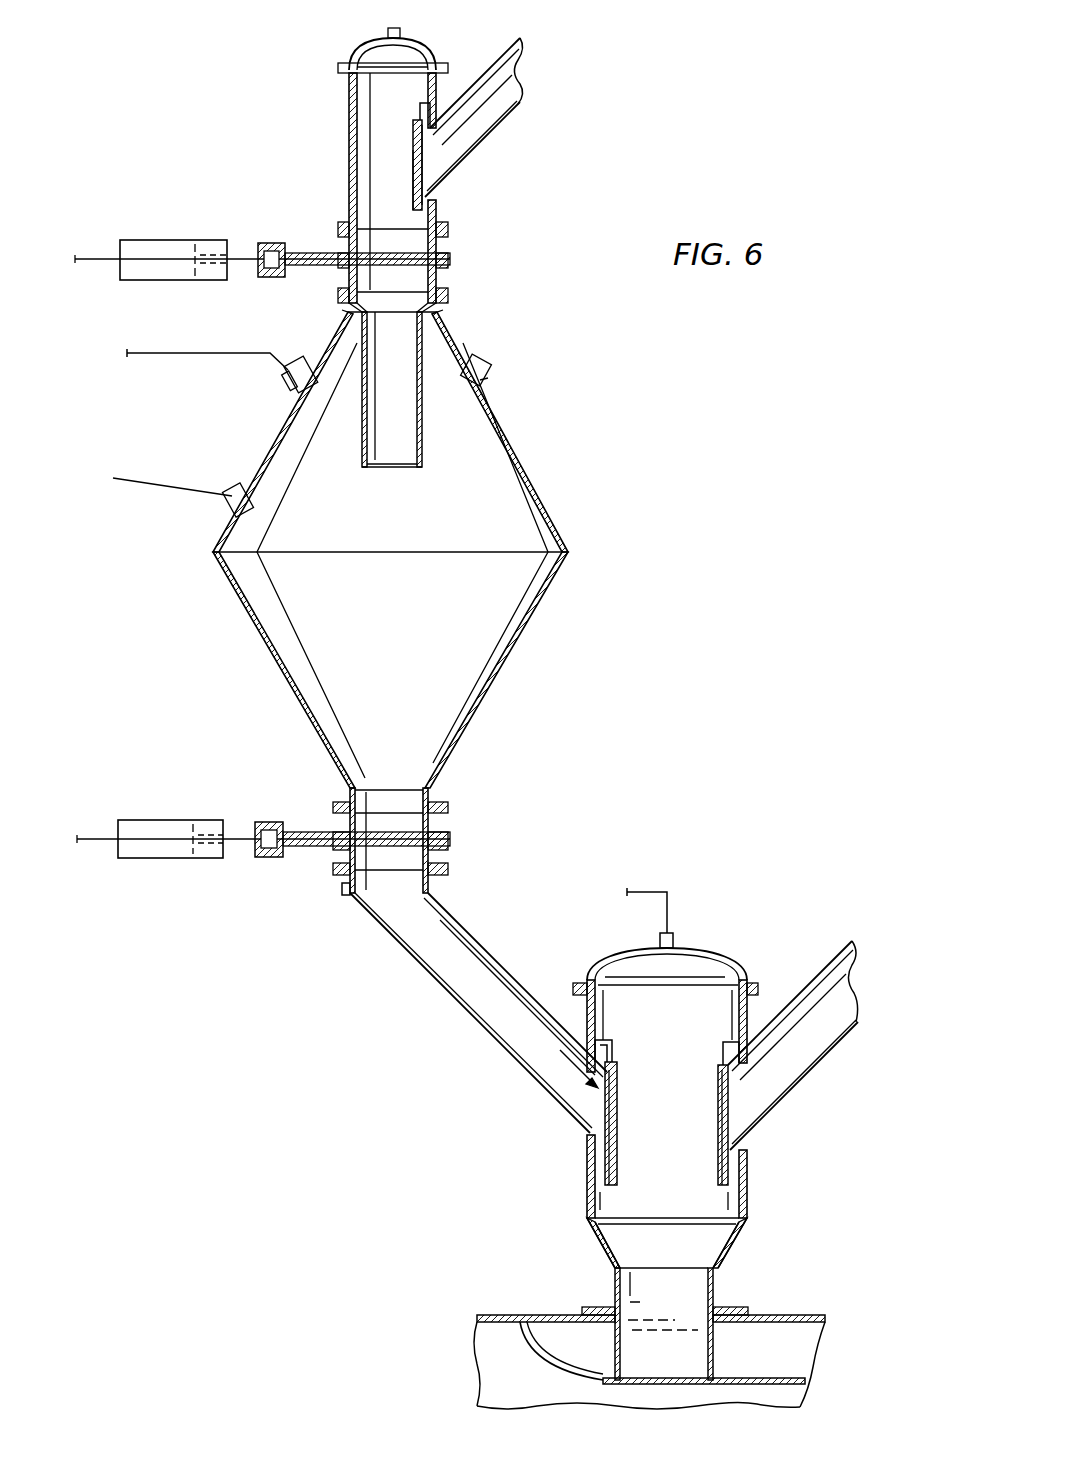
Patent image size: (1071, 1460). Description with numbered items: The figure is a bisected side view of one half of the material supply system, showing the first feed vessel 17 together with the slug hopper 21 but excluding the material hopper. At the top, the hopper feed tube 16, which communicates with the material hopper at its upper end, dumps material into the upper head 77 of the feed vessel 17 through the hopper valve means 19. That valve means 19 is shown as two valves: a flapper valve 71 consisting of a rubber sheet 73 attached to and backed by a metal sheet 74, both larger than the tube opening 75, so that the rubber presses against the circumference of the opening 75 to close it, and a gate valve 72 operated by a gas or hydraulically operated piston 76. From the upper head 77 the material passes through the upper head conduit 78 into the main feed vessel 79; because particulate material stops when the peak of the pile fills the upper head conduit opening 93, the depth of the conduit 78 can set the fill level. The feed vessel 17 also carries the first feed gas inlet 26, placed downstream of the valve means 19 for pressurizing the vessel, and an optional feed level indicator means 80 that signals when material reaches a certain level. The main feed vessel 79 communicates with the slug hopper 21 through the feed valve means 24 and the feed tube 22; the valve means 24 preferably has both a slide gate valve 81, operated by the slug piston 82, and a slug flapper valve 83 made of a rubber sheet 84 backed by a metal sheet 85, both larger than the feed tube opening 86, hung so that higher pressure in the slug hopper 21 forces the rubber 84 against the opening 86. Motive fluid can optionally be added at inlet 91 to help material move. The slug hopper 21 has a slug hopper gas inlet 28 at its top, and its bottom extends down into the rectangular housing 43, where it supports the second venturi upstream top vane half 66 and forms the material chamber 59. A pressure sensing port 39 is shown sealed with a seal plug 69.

The hopper feed tube 16 is at (513, 117).
The first feed vessel 17 is at (530, 465).
The hopper valve means 19 is at (337, 250).
The slug hopper 21 is at (595, 1237).
The feed tube 22 is at (433, 980).
The feed valve means 24 is at (506, 970).
The first feed gas inlet 26 is at (290, 385).
The slug hopper gas inlet 28 is at (675, 935).
The pressure sensing port 39 is at (488, 377).
The rectangular housing 43 is at (503, 1315).
The material chamber 59 is at (655, 1343).
The second venturi upstream top vane half 66 is at (550, 1362).
The seal plug 69 is at (470, 362).
The flapper valve 71 is at (413, 135).
The gate valve 72 is at (272, 242).
The rubber sheet 73 is at (425, 112).
The metal sheet 74 is at (415, 127).
The tube opening 75 is at (427, 153).
The piston 76 is at (163, 240).
The upper head 77 is at (348, 97).
The upper head conduit 78 is at (422, 347).
The main feed vessel 79 is at (553, 527).
The feed level indicator means 80 is at (247, 510).
The slide gate valve 81 is at (242, 832).
The slug piston 82 is at (148, 820).
The slug flapper valve 83 is at (617, 1073).
The rubber sheet 84 is at (617, 1128).
The metal sheet 85 is at (617, 1162).
The feed tube opening 86 is at (605, 1108).
The inlet 91 is at (345, 896).
The upper head conduit opening 93 is at (395, 472).